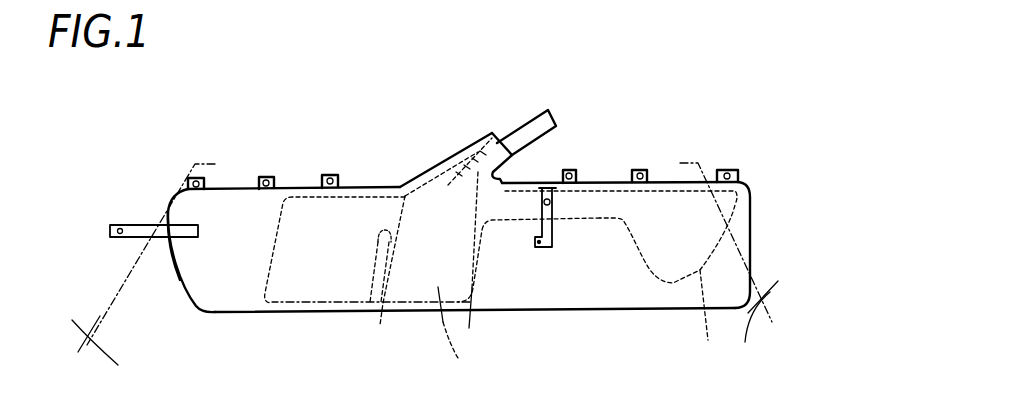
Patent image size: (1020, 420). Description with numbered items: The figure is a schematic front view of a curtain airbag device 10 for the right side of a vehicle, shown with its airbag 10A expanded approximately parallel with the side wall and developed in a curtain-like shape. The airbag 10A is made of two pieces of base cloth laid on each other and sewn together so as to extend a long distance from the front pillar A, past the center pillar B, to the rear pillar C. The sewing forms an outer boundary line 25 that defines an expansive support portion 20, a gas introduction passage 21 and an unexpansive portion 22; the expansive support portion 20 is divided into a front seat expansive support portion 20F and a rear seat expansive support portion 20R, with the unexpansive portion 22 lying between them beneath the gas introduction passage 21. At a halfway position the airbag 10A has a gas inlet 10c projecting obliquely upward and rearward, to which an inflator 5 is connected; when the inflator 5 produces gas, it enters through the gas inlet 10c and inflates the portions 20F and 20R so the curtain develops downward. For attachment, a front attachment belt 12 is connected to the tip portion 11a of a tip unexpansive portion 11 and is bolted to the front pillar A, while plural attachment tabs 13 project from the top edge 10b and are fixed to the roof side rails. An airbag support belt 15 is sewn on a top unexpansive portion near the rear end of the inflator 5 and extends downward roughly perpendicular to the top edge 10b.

The inflator 5 is at (536, 117).
The curtain airbag device 10 is at (624, 139).
The airbag 10A is at (524, 318).
The top edge 10b is at (312, 187).
The gas inlet 10c is at (488, 134).
The tip unexpansive portion 11 is at (225, 263).
The tip portion 11a is at (167, 240).
The front attachment belt 12 is at (133, 222).
The attachment tabs 13 is at (200, 178).
The airbag support belt 15 is at (553, 236).
The expansive support portion 20 is at (345, 290).
The front seat expansive support portion 20F is at (293, 280).
The rear seat expansive support portion 20R is at (662, 260).
The gas introduction passage 21 is at (443, 187).
The unexpansive portion 22 is at (593, 243).
The outer boundary line 25 is at (408, 302).
The front pillar A is at (143, 272).
The center pillar B is at (456, 334).
The rear pillar C is at (729, 261).